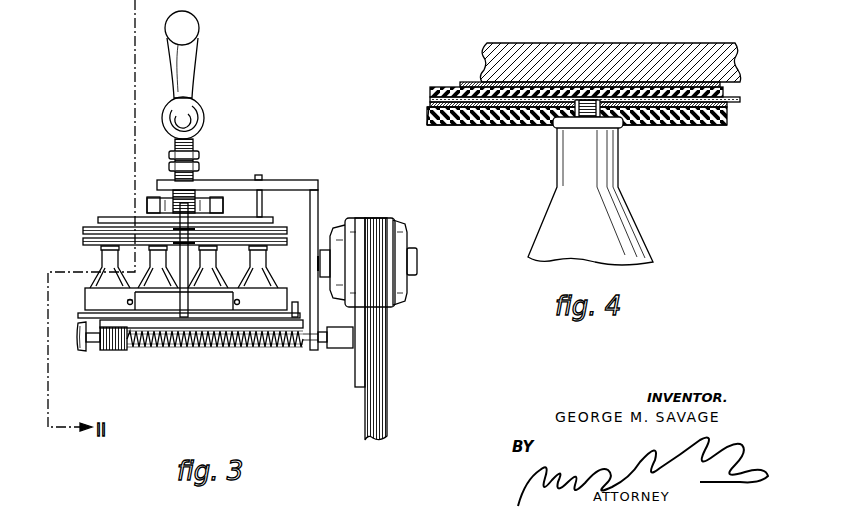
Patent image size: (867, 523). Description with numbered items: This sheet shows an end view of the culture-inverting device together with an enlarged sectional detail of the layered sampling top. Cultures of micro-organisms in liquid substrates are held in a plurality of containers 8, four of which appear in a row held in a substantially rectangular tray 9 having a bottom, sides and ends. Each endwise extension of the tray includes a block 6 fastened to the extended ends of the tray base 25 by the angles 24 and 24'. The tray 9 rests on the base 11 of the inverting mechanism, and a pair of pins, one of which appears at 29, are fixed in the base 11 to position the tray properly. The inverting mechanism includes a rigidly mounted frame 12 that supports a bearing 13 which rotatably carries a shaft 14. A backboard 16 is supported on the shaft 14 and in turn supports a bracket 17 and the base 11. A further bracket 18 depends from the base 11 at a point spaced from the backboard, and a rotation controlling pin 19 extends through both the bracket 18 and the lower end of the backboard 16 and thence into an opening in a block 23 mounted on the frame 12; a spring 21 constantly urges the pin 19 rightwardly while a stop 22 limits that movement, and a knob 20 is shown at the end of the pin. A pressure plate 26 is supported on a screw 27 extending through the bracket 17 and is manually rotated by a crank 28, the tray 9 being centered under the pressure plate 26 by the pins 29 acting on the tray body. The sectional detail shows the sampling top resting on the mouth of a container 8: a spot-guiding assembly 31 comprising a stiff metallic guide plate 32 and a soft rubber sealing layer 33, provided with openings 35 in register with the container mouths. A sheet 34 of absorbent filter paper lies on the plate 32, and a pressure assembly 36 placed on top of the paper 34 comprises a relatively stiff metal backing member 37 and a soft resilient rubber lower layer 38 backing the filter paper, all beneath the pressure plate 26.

In FIG. 3, the block 6 is at (210, 302).
In FIG. 3, the container 8 is at (107, 267).
In FIG. 4, the container 8 is at (613, 192).
In FIG. 3, the tray 9 is at (80, 298).
In FIG. 3, the base 11 is at (300, 323).
In FIG. 3, the frame 12 is at (358, 222).
In FIG. 3, the bearing 13 is at (335, 225).
In FIG. 3, the shaft 14 is at (324, 276).
In FIG. 3, the backboard 16 is at (315, 202).
In FIG. 3, the bracket 17 is at (208, 183).
In FIG. 3, the bracket 18 is at (102, 349).
In FIG. 3, the rotation controlling pin 19 is at (173, 341).
In FIG. 3, the knob 20 is at (78, 340).
In FIG. 3, the spring 21 is at (163, 343).
In FIG. 3, the stop 22 is at (308, 338).
In FIG. 3, the block 23 is at (343, 344).
In FIG. 3, the angle 24 is at (268, 285).
In FIG. 3, the angle 24' is at (84, 275).
In FIG. 3, the tray base 25 is at (78, 315).
In FIG. 3, the pressure plate 26 is at (132, 220).
In FIG. 4, the pressure plate 26 is at (617, 43).
In FIG. 3, the screw 27 is at (172, 147).
In FIG. 3, the crank 28 is at (198, 38).
In FIG. 3, the pin 29 is at (254, 334).
In FIG. 4, the spot-guiding assembly 31 is at (472, 128).
In FIG. 4, the guide plate 32 is at (728, 108).
In FIG. 4, the sealing layer 33 is at (643, 123).
In FIG. 4, the sheet of absorbent material 34 is at (448, 100).
In FIG. 4, the opening 35 is at (592, 115).
In FIG. 4, the pressure assembly 36 is at (467, 82).
In FIG. 4, the backing member 37 is at (730, 89).
In FIG. 4, the lower layer 38 is at (458, 87).